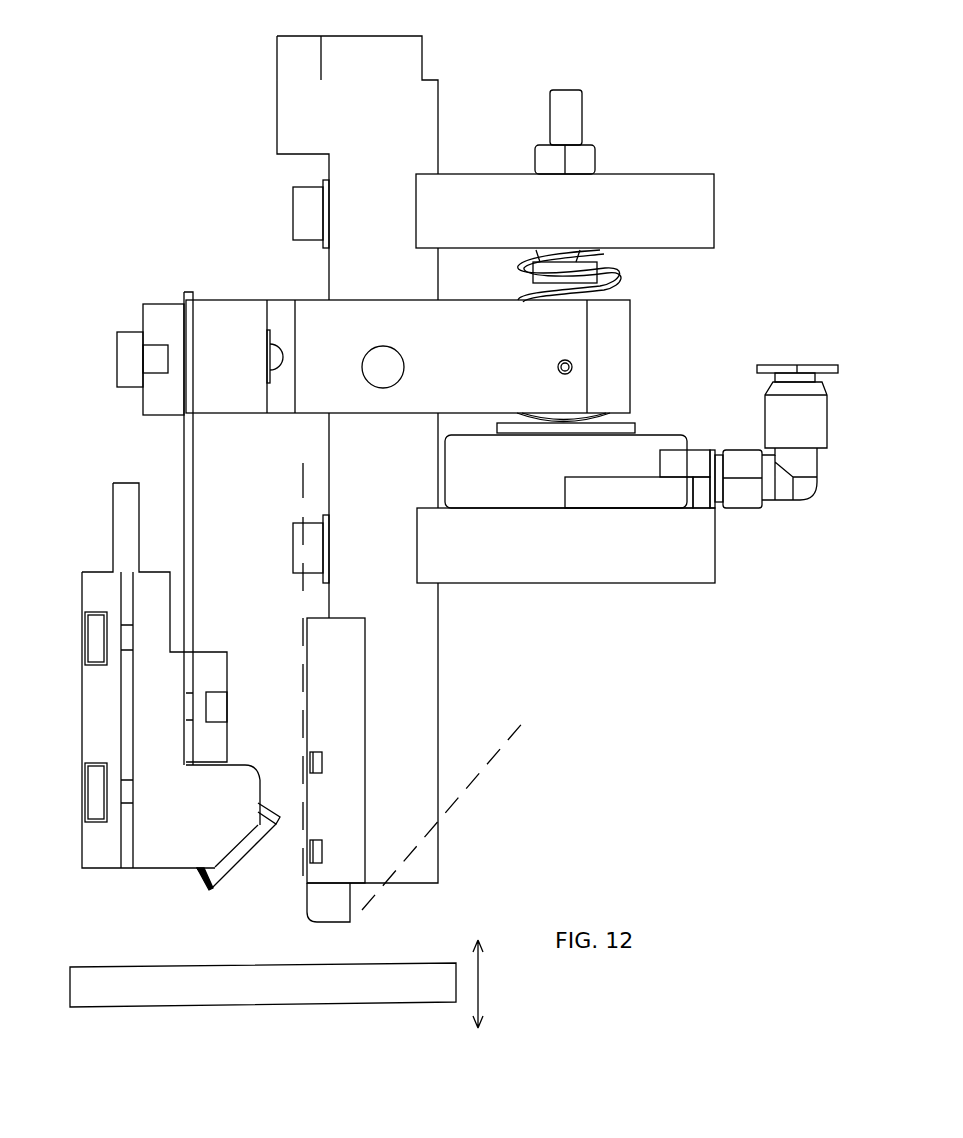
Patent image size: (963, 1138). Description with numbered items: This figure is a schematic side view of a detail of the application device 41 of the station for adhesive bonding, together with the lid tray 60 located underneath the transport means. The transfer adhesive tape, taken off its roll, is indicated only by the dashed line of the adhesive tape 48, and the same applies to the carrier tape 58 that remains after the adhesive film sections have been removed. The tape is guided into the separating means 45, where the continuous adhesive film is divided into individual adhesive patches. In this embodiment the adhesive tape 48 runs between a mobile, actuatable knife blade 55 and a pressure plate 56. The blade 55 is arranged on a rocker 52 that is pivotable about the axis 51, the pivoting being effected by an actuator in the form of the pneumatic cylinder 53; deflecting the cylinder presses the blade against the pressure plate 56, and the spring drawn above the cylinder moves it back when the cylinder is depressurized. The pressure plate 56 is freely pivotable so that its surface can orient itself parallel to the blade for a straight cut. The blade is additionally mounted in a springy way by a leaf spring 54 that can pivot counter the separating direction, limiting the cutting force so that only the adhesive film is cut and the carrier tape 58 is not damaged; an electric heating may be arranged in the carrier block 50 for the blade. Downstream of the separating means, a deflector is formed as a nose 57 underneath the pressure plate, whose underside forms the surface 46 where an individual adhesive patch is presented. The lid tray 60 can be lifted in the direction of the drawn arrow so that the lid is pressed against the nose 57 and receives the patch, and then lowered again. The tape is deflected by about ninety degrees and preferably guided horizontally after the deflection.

The application device 41 is at (420, 123).
The separating means 45 is at (440, 660).
The surface 46 is at (323, 922).
The adhesive tape 48 is at (302, 487).
The carrier block 50 is at (93, 700).
The axis 51 is at (368, 360).
The rocker 52 is at (481, 377).
The pneumatic cylinder 53 is at (640, 452).
The leaf spring 54 is at (183, 458).
The knife blade 55 is at (266, 819).
The pressure plate 56 is at (353, 808).
The nose 57 is at (318, 903).
The carrier tape 58 is at (470, 797).
The lid tray 60 is at (110, 983).